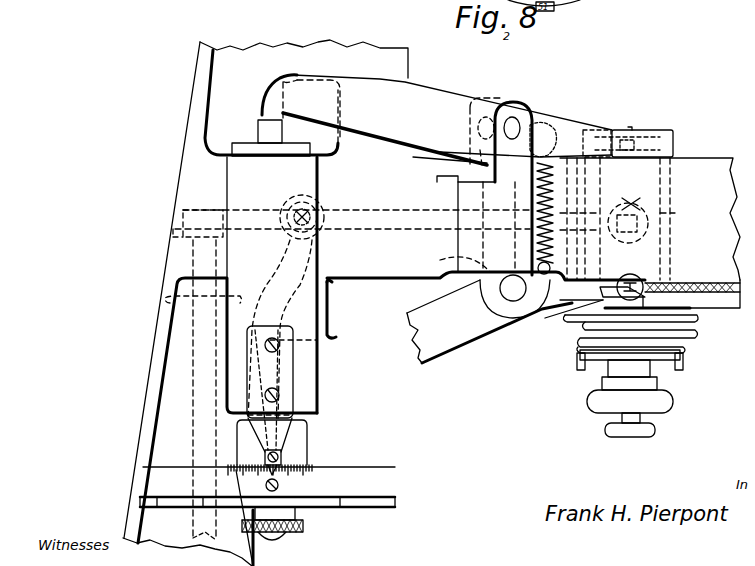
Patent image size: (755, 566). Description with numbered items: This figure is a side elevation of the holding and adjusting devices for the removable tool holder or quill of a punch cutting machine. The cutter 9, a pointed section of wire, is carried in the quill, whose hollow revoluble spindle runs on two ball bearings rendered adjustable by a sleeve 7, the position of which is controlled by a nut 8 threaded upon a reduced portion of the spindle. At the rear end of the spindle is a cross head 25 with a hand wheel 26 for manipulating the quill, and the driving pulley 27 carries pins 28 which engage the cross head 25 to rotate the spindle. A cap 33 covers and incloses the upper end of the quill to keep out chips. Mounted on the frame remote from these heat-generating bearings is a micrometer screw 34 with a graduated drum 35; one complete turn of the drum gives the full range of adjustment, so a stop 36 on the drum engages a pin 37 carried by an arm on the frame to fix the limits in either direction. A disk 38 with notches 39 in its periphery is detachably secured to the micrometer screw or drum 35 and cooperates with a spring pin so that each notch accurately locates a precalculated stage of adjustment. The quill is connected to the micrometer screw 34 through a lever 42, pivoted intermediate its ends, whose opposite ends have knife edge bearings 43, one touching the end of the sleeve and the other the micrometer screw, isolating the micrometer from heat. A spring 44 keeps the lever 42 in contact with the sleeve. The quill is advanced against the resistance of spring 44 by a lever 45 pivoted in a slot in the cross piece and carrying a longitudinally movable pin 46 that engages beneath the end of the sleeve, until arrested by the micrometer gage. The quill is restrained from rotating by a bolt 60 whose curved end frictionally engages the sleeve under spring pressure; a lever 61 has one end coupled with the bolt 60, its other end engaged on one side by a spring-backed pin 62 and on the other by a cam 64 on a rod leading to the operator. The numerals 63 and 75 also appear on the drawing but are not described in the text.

The sleeve 7 is at (708, 158).
The nut 8 is at (664, 278).
The cutter 9 is at (628, 150).
The cross head 25 is at (658, 363).
The hand wheel 26 is at (597, 403).
The driving pulley 27 is at (700, 326).
The pins 28 is at (685, 367).
The cap 33 is at (674, 145).
The micrometer screw 34 is at (262, 125).
The graduated drum 35 is at (173, 472).
The stop 36 is at (265, 456).
The pin 37 is at (282, 450).
The disk 38 is at (357, 503).
The notches 39 is at (390, 509).
The lever 42 is at (452, 106).
The knife edge bearings 43 is at (680, 110).
The spring 44 is at (553, 157).
The lever 45 is at (460, 332).
The pin 46 is at (637, 279).
The bolt 60 is at (628, 210).
The lever 61 is at (398, 215).
The pin 62 is at (322, 210).
The pin 63 is at (313, 243).
The cam 64 is at (208, 204).
The nut 75 is at (633, 414).